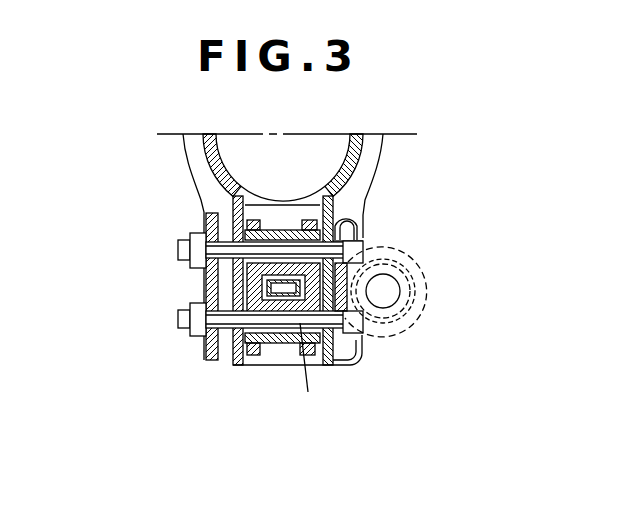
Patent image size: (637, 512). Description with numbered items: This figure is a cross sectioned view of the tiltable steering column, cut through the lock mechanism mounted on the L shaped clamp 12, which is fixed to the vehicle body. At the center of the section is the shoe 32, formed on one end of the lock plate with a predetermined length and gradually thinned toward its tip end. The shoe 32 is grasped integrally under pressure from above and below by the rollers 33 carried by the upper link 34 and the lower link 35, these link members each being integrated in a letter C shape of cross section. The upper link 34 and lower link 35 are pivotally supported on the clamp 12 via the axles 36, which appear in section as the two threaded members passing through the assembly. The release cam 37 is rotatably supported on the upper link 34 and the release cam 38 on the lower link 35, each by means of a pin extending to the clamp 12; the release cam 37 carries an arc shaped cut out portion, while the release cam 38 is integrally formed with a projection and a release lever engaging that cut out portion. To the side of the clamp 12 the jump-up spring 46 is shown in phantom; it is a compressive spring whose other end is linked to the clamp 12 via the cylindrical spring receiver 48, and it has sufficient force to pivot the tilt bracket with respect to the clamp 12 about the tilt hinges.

The clamp 12 is at (378, 165).
The shoe 32 is at (308, 392).
The rollers 33 is at (285, 222).
The upper link 34 is at (257, 203).
The lower link 35 is at (256, 362).
The axles 36 is at (178, 251).
The release cam 37 is at (199, 188).
The release cam 38 is at (214, 360).
The jump-up spring 46 is at (427, 268).
The cylindrical spring receiver 48 is at (405, 249).